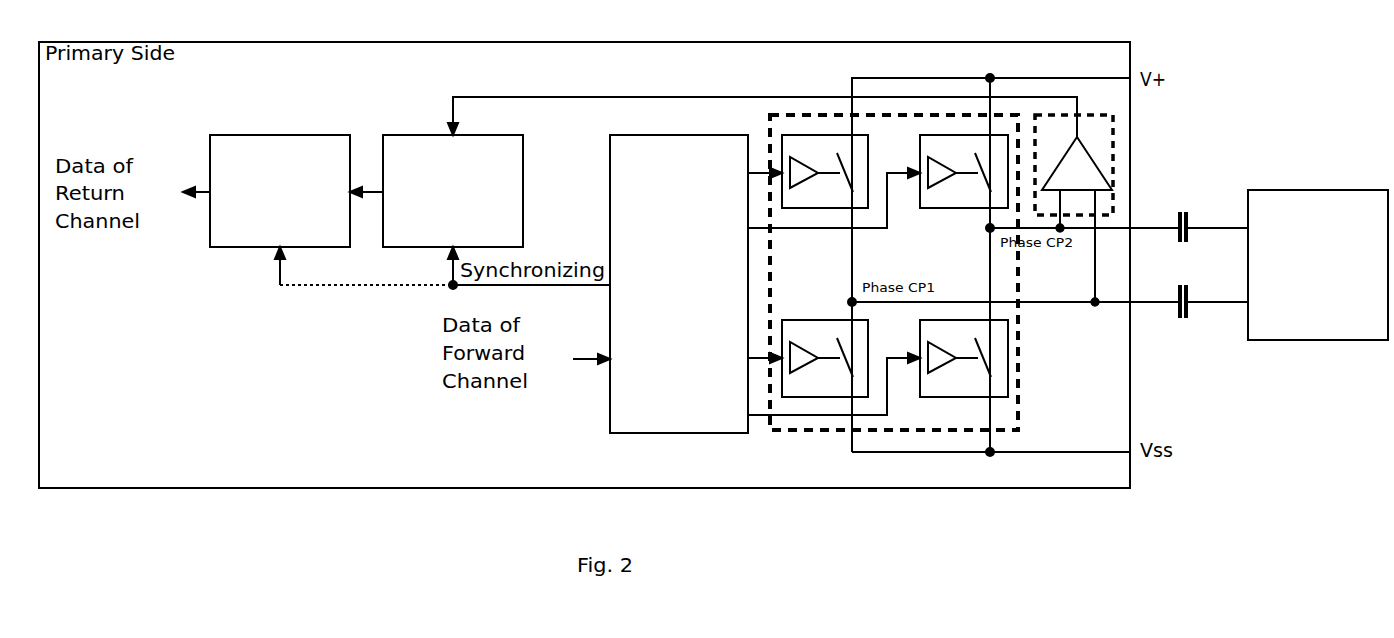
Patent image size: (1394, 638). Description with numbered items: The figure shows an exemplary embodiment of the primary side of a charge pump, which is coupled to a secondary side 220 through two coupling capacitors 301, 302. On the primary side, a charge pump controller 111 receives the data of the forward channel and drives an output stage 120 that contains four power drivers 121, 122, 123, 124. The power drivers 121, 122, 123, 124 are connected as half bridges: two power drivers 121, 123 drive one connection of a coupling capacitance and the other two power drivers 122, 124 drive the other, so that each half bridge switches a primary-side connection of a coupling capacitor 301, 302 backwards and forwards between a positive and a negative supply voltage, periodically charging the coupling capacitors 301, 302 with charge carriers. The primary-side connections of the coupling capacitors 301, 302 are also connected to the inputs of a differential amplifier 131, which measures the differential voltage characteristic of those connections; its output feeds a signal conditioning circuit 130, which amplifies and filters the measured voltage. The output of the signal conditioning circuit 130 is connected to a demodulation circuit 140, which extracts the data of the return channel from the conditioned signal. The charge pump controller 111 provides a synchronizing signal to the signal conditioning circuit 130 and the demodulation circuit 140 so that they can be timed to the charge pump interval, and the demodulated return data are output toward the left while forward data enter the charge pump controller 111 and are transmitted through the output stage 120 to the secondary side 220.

The charge pump controller 111 is at (681, 456).
The output stage 120 is at (928, 272).
The power driver 121 is at (822, 216).
The power driver 122 is at (950, 216).
The power driver 123 is at (812, 317).
The power driver 124 is at (918, 344).
The signal conditioning circuit 130 is at (1149, 145).
The differential amplifier 131 is at (1112, 178).
The demodulation circuit 140 is at (280, 191).
The secondary side 220 is at (1318, 265).
The coupling capacitor 301 is at (1196, 243).
The coupling capacitor 302 is at (1205, 310).